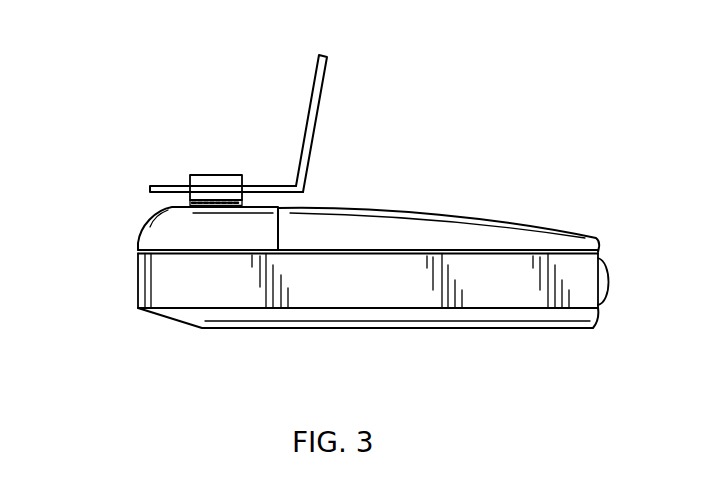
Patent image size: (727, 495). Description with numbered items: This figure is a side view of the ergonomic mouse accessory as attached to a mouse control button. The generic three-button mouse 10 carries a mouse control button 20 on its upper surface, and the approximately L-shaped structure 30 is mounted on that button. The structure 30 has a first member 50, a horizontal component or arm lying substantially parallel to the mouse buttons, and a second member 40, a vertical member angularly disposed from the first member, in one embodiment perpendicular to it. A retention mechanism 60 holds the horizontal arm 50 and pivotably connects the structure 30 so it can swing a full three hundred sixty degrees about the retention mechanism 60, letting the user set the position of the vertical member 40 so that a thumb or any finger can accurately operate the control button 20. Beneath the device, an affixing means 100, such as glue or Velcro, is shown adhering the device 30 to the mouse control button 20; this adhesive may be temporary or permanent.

The mouse 10 is at (495, 213).
The mouse control button 20 is at (138, 243).
The L-shaped structure 30 is at (298, 74).
The second member 40 is at (316, 117).
The first member 50 is at (273, 185).
The retention mechanism 60 is at (190, 177).
The affixing means 100 is at (192, 203).